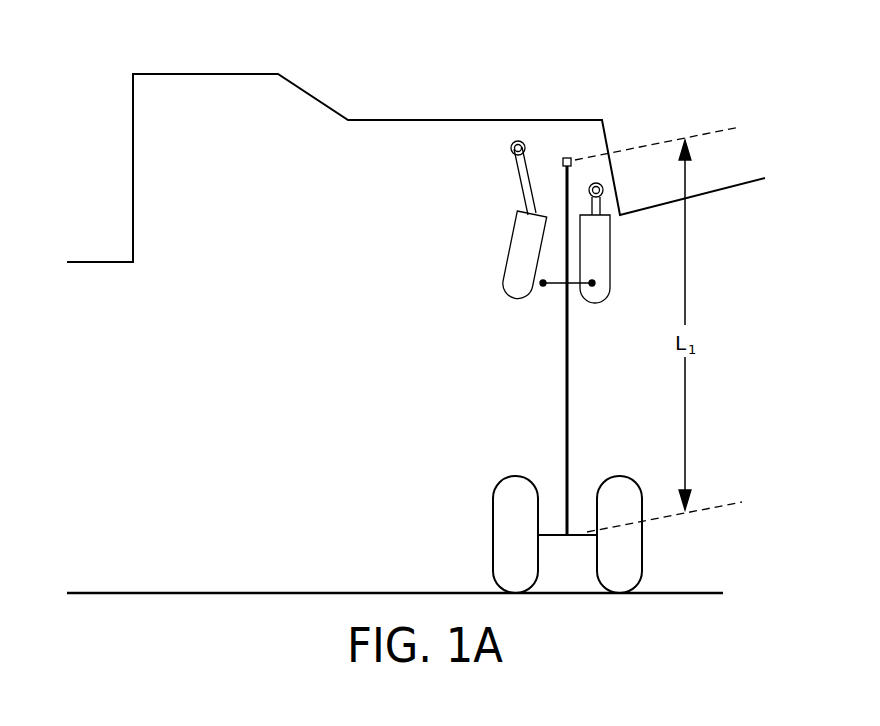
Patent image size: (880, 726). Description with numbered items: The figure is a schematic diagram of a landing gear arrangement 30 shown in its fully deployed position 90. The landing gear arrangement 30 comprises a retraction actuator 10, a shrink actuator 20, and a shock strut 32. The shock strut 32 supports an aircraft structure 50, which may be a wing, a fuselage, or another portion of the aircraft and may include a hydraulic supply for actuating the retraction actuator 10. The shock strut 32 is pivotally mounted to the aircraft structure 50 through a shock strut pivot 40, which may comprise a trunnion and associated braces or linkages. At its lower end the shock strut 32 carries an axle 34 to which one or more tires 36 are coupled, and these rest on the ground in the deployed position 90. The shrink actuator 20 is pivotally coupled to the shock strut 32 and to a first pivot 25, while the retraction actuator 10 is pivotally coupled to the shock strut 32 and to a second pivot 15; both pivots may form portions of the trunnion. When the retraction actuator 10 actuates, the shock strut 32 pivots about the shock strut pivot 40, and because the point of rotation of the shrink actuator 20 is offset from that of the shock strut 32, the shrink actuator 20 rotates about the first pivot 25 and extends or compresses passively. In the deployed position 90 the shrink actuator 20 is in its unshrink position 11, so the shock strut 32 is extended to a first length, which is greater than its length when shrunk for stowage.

The retraction actuator 10 is at (625, 238).
The unshrink position 11 is at (468, 232).
The second pivot 15 is at (604, 189).
The shrink actuator 20 is at (518, 219).
The first pivot 25 is at (511, 148).
The landing gear arrangement 30 is at (443, 80).
The shock strut 32 is at (566, 350).
The axle 34 is at (553, 537).
The tires 36 is at (641, 535).
The shock strut pivot 40 is at (567, 158).
The aircraft structure 50 is at (382, 121).
The deployed position 90 is at (390, 457).